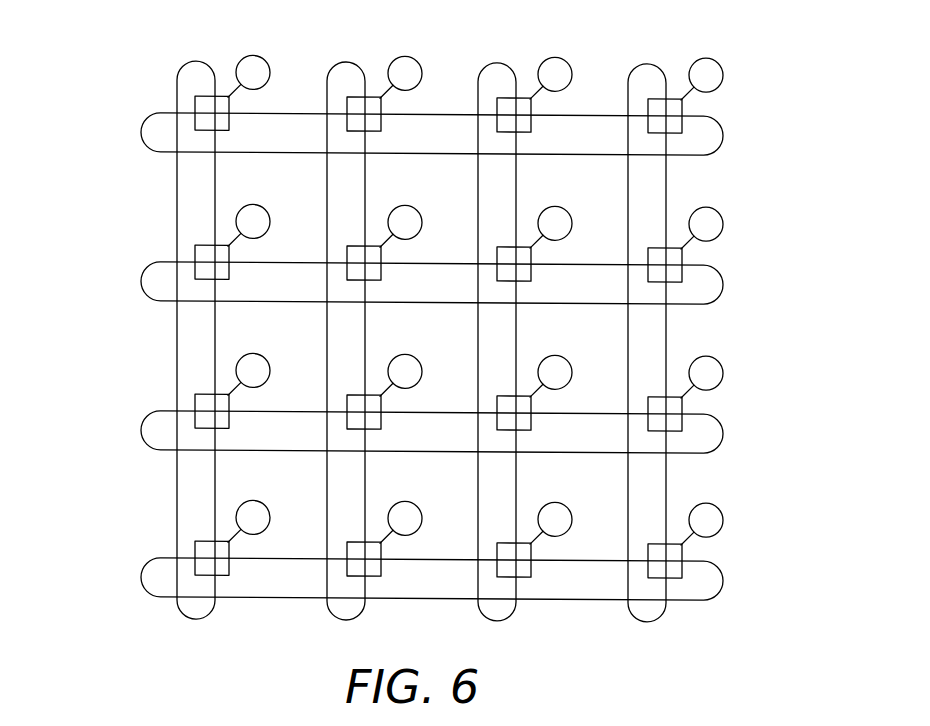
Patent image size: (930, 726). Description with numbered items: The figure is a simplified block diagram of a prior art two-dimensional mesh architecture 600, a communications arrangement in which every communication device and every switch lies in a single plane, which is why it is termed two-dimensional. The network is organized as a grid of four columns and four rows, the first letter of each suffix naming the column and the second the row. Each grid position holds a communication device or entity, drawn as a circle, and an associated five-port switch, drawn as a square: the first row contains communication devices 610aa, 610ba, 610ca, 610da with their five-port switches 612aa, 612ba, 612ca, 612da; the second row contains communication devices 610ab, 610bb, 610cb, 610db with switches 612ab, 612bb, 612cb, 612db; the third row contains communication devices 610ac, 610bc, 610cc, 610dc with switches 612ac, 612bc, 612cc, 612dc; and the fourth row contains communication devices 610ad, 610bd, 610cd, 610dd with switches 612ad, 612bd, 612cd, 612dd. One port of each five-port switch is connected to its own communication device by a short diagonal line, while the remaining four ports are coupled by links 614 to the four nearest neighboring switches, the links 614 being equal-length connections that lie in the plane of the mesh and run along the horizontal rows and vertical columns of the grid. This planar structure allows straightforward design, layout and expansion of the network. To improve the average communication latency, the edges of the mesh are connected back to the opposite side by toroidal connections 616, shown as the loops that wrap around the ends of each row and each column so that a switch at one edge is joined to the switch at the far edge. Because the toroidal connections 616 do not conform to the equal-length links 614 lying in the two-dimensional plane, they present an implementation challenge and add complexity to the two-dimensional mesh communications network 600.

The 2-d mesh architecture 600 is at (404, 358).
The links 614 is at (450, 113).
The toroidal connections 616 is at (177, 222).
The communication device 610aa is at (274, 36).
The communication device 610ba is at (425, 36).
The communication device 610ca is at (573, 36).
The communication device 610da is at (732, 36).
The communication device 610ab is at (271, 194).
The communication device 610bb is at (423, 194).
The communication device 610cb is at (573, 194).
The communication device 610db is at (735, 203).
The communication device 610ac is at (265, 344).
The communication device 610bc is at (412, 370).
The communication device 610cc is at (566, 343).
The communication device 610dc is at (708, 357).
The communication device 610ad is at (271, 489).
The communication device 610bd is at (420, 489).
The communication device 610cd is at (572, 489).
The communication device 610dd is at (724, 491).
The five-port switch 612aa is at (226, 126).
The five-port switch 612ba is at (378, 127).
The five-port switch 612ca is at (528, 127).
The five-port switch 612da is at (682, 108).
The five-port switch 612ab is at (226, 275).
The five-port switch 612bb is at (378, 277).
The five-port switch 612cb is at (528, 277).
The five-port switch 612db is at (682, 260).
The five-port switch 612ac is at (226, 424).
The five-port switch 612bc is at (378, 426).
The five-port switch 612cc is at (528, 426).
The five-port switch 612dc is at (682, 402).
The five-port switch 612ad is at (228, 574).
The five-port switch 612bd is at (380, 574).
The five-port switch 612cd is at (530, 575).
The five-port switch 612dd is at (682, 552).